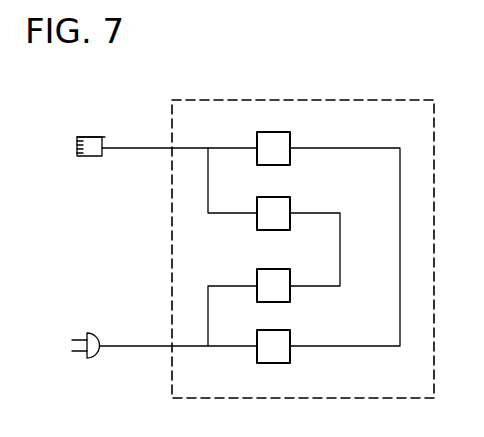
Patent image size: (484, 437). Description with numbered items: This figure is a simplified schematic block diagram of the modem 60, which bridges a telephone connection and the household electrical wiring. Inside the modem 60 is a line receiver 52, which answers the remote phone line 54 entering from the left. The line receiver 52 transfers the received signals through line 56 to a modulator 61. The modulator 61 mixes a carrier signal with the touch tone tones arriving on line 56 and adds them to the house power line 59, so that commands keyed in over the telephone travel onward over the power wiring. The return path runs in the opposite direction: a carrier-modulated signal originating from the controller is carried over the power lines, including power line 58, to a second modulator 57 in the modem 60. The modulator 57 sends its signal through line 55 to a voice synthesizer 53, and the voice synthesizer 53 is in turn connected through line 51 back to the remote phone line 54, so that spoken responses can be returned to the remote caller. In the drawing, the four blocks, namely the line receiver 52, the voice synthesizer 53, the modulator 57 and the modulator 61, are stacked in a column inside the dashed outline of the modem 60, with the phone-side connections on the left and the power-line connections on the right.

The modem 60 is at (387, 99).
The remote phone line 54 is at (151, 148).
The line 51 is at (208, 211).
The line receiver 52 is at (275, 132).
The line 56 is at (349, 148).
The voice synthesizer 53 is at (257, 229).
The line 55 is at (317, 213).
The modulator 57 is at (290, 300).
The power line 58 is at (207, 285).
The house power line 59 is at (155, 346).
The modulator 61 is at (258, 363).